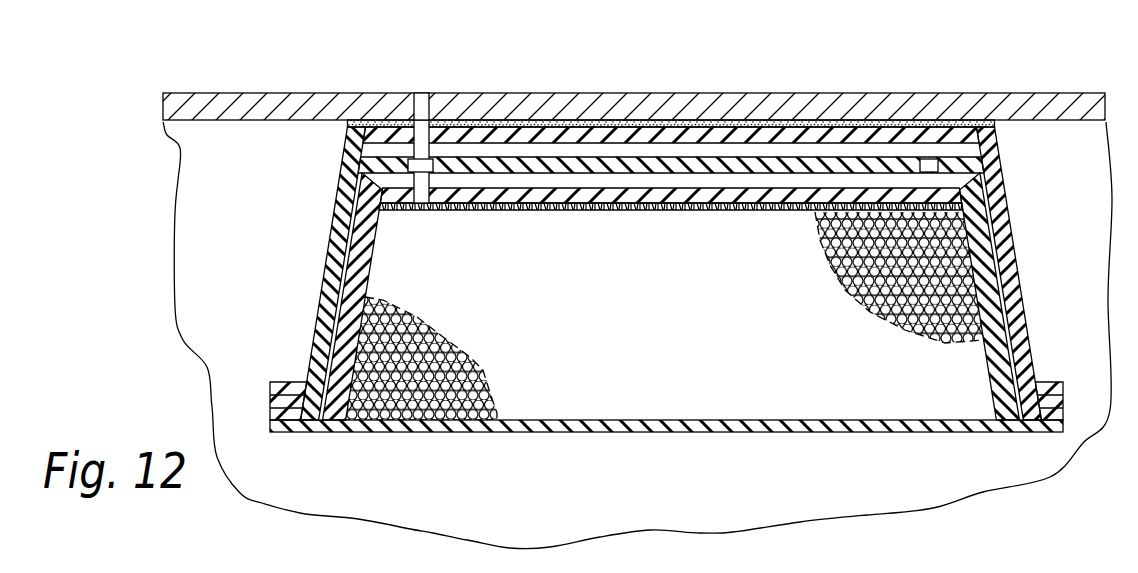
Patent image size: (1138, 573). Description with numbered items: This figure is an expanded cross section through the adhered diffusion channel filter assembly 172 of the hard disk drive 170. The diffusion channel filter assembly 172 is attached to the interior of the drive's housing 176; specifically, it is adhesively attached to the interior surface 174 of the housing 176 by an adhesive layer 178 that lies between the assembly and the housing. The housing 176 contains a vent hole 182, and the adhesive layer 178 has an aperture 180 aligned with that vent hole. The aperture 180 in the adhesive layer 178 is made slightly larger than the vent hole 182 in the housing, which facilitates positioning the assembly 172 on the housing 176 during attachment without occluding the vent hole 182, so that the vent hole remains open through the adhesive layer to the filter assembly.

The hard disk drive 170 is at (672, 73).
The diffusion channel filter assembly 172 is at (303, 250).
The interior surface 174 is at (205, 121).
The housing 176 is at (527, 93).
The adhesive layer 178 is at (990, 124).
The aperture 180 is at (415, 127).
The vent hole 182 is at (422, 103).